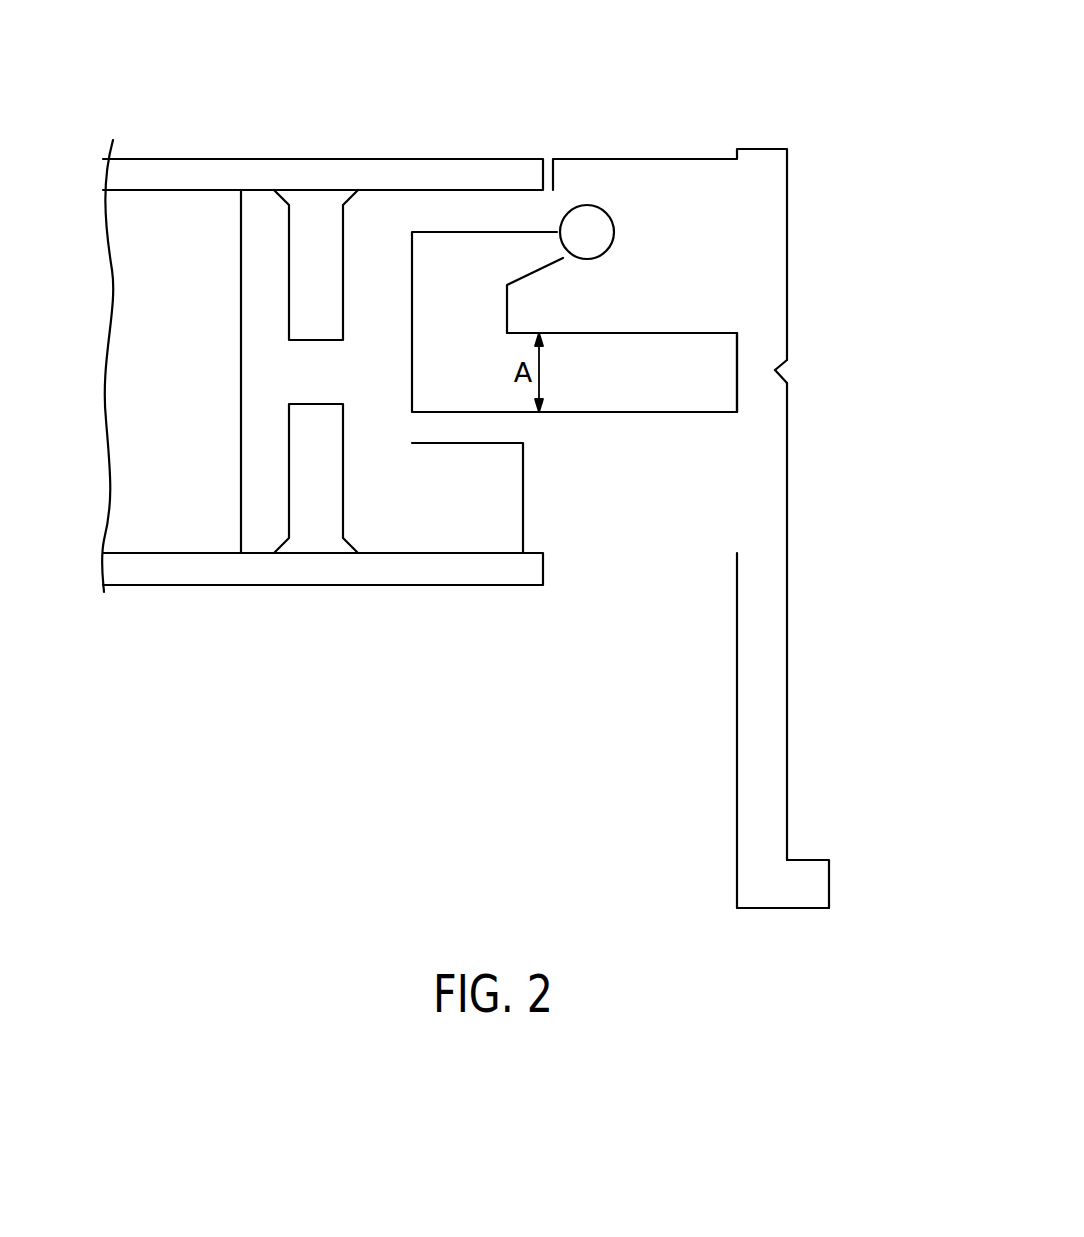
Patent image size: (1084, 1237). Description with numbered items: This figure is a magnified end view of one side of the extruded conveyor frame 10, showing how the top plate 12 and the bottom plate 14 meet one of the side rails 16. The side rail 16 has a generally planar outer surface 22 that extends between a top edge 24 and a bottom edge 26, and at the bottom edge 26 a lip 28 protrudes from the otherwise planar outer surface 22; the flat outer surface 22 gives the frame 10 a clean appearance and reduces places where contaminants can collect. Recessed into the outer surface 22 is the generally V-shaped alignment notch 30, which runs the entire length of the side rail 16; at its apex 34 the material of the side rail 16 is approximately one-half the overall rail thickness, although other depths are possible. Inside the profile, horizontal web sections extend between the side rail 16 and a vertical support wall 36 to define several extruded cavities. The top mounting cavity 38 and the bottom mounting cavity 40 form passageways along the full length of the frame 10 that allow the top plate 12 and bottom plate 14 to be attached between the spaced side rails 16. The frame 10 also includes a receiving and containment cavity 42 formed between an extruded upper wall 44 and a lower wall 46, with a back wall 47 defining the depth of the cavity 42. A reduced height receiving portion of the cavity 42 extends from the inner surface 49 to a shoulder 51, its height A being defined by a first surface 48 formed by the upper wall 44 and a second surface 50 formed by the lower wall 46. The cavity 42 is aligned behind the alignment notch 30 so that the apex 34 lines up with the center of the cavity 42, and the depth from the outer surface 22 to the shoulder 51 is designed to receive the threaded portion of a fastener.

The conveyor frame 10 is at (425, 90).
The top plate 12 is at (192, 168).
The bottom plate 14 is at (173, 570).
The side rail 16 is at (770, 662).
The outer surface 22 is at (790, 482).
The top edge 24 is at (760, 149).
The bottom edge 26 is at (790, 908).
The lip 28 is at (808, 860).
The alignment notch 30 is at (783, 372).
The apex 34 is at (775, 370).
The vertical support wall 36 is at (260, 310).
The top mounting cavity 38 is at (323, 213).
The bottom mounting cavity 40 is at (317, 523).
The receiving and containment cavity 42 is at (612, 345).
The upper wall 44 is at (515, 333).
The lower wall 46 is at (588, 412).
The back wall 47 is at (417, 378).
The first surface 48 is at (645, 335).
The inner surface 49 is at (737, 390).
The second surface 50 is at (617, 410).
The shoulder 51 is at (507, 310).